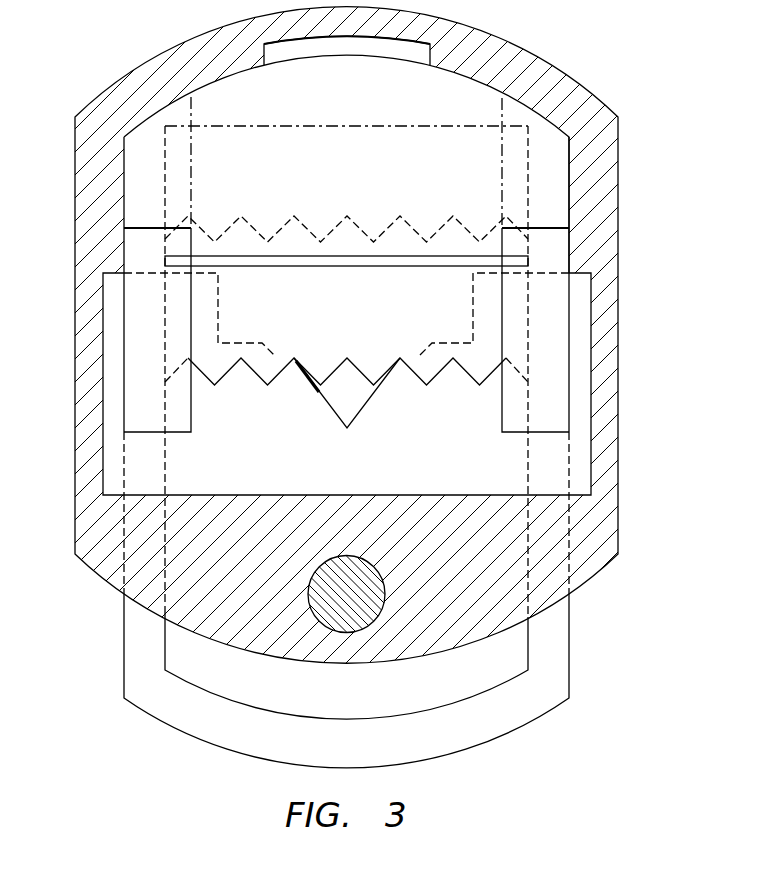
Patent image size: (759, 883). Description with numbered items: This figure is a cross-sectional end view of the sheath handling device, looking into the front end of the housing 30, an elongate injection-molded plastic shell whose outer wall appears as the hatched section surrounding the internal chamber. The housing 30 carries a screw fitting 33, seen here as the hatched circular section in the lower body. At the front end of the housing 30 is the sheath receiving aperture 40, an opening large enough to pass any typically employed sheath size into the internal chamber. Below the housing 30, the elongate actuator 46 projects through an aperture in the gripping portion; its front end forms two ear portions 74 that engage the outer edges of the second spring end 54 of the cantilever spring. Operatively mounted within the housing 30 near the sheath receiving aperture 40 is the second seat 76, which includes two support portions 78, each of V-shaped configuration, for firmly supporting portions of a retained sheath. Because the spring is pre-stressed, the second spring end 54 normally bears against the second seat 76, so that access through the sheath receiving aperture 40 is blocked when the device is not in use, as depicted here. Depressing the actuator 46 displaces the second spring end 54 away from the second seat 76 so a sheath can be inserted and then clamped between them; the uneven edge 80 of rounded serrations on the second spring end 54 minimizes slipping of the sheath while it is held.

The housing 30 is at (571, 78).
The screw fitting 33 is at (357, 604).
The sheath receiving aperture 40 is at (360, 408).
The actuator 46 is at (359, 757).
The second spring end 54 is at (383, 306).
The ear portions 74 is at (137, 344).
The second seat 76 is at (429, 460).
The support portions 78 is at (315, 398).
The uneven edge 80 is at (297, 359).